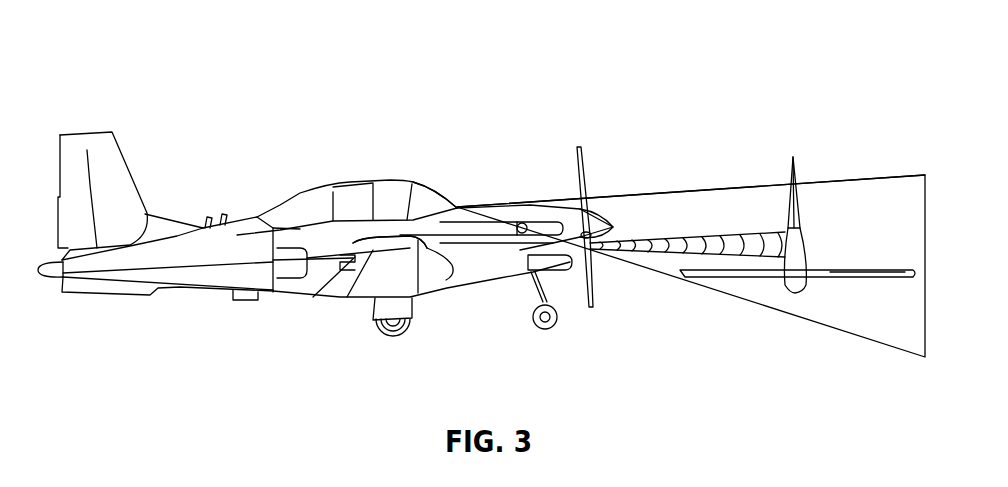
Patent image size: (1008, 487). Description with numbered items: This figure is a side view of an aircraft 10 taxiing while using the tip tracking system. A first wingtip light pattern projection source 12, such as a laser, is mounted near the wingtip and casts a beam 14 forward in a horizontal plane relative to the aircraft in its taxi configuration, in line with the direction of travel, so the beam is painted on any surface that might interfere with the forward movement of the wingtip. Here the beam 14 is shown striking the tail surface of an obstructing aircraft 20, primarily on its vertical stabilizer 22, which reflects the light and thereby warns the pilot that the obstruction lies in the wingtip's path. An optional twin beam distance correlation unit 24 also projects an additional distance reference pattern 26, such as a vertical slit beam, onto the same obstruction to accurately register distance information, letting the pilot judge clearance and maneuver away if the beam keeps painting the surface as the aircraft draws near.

The aircraft 10 is at (418, 62).
The first wingtip light pattern projection source 12 is at (425, 245).
The beam 14 is at (680, 233).
The obstructing aircraft 20 is at (843, 224).
The vertical stabilizer 22 is at (790, 157).
The twin beam distance correlation unit 24 is at (457, 208).
The distance reference pattern 26 is at (835, 180).